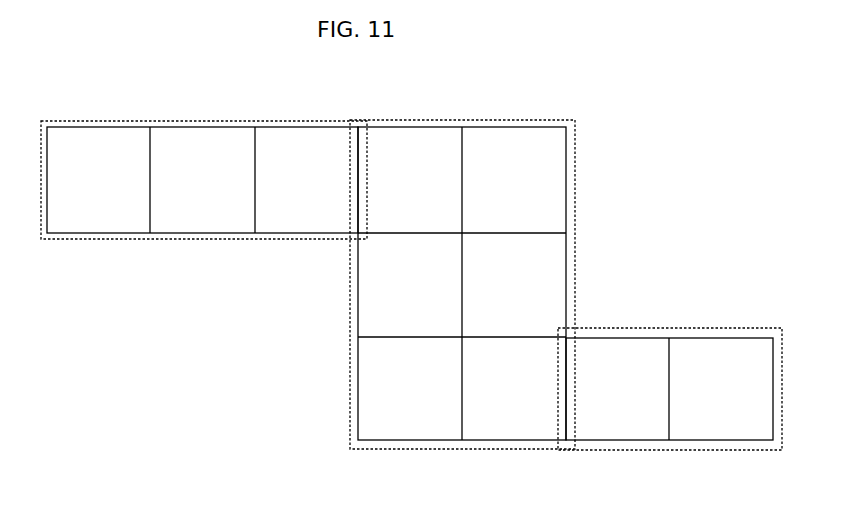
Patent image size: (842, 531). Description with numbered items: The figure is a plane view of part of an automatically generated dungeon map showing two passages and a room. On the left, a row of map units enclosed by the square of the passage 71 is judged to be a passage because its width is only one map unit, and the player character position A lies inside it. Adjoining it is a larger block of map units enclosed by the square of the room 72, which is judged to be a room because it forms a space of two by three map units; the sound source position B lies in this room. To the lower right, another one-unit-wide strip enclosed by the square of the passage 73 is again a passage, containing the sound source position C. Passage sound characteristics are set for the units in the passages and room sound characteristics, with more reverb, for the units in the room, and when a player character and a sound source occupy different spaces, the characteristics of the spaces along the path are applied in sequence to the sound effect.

The passage 71 is at (205, 240).
The room 72 is at (473, 121).
The passage 73 is at (697, 328).